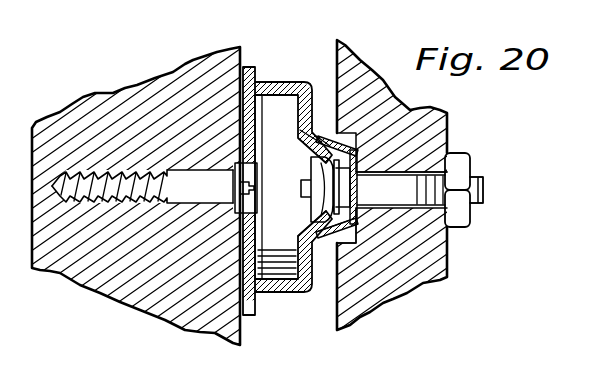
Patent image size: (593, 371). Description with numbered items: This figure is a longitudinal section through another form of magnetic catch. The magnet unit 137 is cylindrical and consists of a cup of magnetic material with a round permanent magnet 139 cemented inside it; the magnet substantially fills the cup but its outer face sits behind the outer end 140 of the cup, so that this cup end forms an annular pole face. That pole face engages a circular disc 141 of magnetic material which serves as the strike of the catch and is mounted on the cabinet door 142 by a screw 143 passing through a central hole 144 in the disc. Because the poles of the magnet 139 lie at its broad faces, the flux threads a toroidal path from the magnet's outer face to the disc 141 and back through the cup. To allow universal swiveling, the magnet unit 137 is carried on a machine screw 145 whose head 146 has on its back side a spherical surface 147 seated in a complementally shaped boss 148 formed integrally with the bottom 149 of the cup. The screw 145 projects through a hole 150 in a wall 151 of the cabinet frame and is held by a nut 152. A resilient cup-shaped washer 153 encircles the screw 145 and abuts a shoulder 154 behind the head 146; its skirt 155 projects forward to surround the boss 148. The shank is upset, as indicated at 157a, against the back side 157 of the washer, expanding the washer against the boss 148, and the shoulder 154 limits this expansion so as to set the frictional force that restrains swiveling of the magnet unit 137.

The magnet unit 137 is at (285, 303).
The permanent magnet 139 is at (267, 250).
The outer end of the cup 140 is at (254, 82).
The circular disc 141 is at (248, 67).
The cabinet door 142 is at (113, 97).
The screw 143 is at (177, 187).
The central hole 144 is at (233, 212).
The machine screw 145 is at (487, 182).
The head 146 is at (315, 247).
The spherical surface 147 is at (313, 237).
The boss 148 is at (348, 254).
The bottom of the cup 149 is at (312, 108).
The hole 150 is at (412, 217).
The wall 151 is at (448, 260).
The nut 152 is at (472, 224).
The resilient cup-shaped washer 153 is at (362, 137).
The shoulder 154 is at (362, 149).
The skirt 155 is at (337, 130).
The back side of the washer 157 is at (362, 222).
The upset shank 157a is at (363, 188).